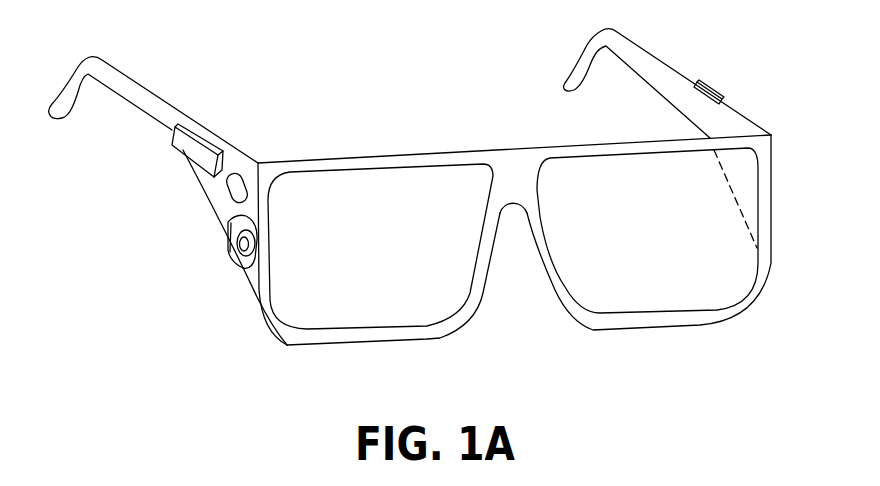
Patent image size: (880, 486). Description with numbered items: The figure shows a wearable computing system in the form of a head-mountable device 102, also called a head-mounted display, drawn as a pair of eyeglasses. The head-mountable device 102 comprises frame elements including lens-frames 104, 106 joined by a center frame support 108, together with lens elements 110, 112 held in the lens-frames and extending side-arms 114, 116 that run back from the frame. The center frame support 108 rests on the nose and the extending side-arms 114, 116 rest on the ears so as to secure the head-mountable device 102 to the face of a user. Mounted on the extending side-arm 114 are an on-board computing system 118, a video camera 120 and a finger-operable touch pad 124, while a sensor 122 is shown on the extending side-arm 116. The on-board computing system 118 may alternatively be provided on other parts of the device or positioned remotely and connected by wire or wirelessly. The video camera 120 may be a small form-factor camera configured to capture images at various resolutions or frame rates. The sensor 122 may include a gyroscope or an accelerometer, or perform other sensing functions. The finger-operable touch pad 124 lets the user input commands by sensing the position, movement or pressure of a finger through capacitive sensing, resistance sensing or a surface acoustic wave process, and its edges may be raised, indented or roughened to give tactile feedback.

The head-mountable device 102 is at (357, 53).
The lens-frame 104 is at (350, 162).
The lens-frame 106 is at (592, 148).
The center frame support 108 is at (517, 170).
The lens element 110 is at (325, 310).
The lens element 112 is at (667, 295).
The extending side-arm 114 is at (192, 127).
The extending side-arm 116 is at (672, 70).
The on-board computing system 118 is at (190, 147).
The video camera 120 is at (228, 232).
The sensor 122 is at (715, 92).
The finger-operable touch pad 124 is at (228, 188).